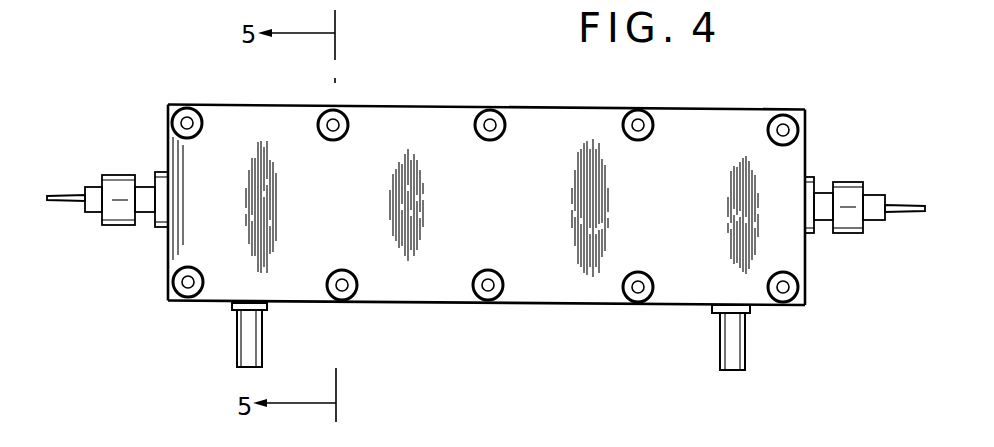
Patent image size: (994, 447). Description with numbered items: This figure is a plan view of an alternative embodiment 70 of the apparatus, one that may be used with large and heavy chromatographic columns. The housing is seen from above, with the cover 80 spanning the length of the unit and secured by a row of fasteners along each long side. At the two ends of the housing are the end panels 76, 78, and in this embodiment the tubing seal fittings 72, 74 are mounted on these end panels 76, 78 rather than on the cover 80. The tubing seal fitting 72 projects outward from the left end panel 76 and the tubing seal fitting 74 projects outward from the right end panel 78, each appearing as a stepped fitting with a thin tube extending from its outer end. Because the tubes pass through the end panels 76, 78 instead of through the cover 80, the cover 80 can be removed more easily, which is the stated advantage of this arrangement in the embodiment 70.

The embodiment 70 is at (492, 322).
The tubing seal fitting 72 is at (117, 227).
The tubing seal fitting 74 is at (852, 230).
The end panel 76 is at (165, 262).
The end panel 78 is at (808, 277).
The cover 80 is at (788, 153).